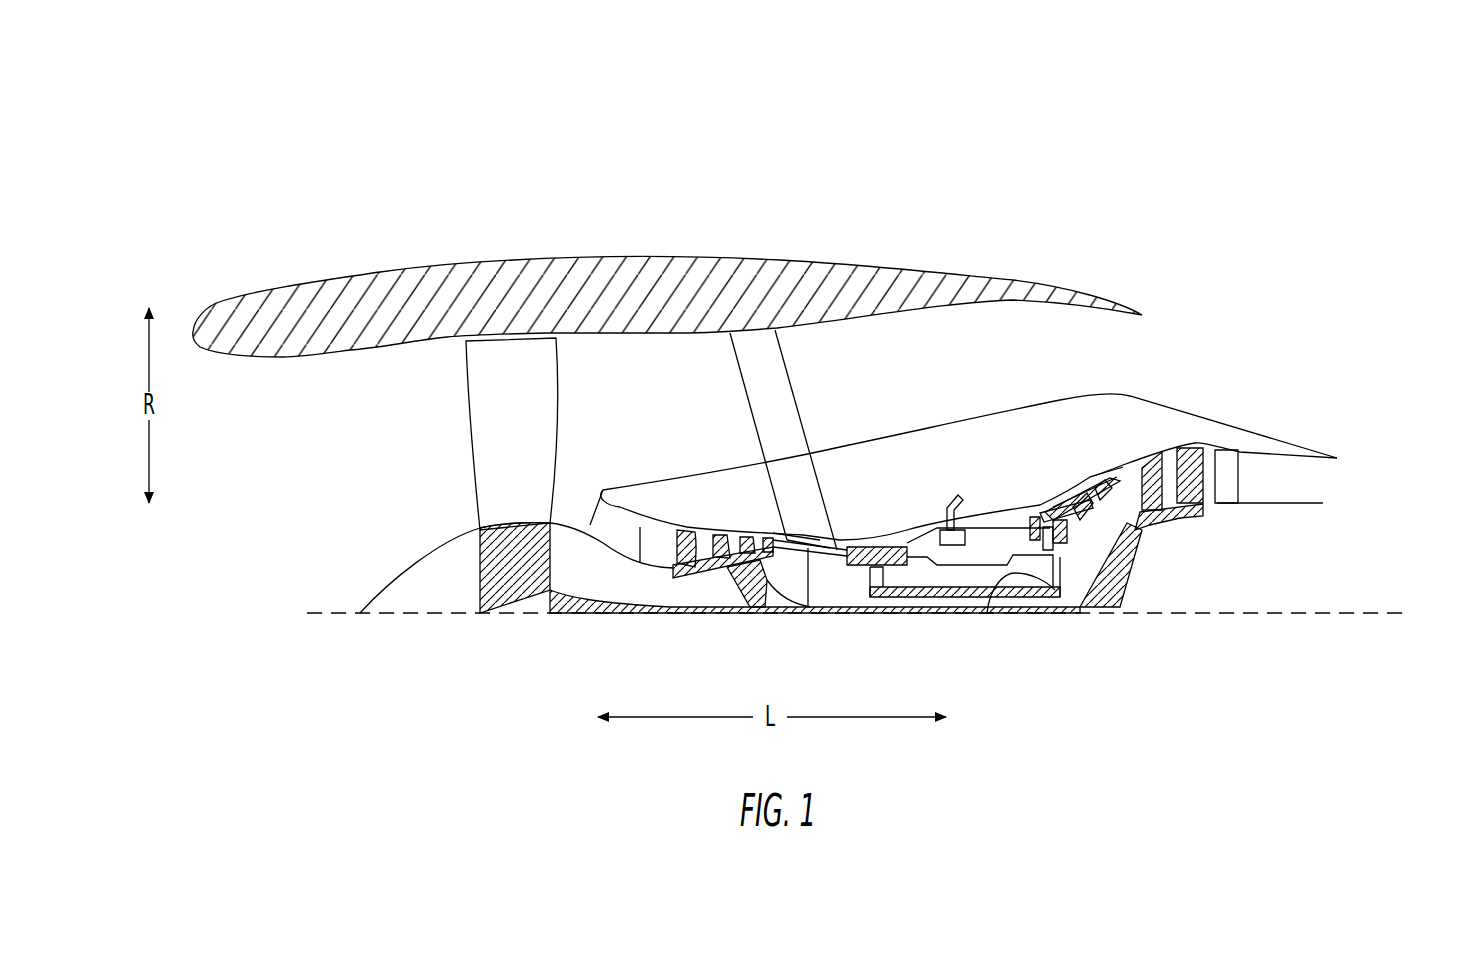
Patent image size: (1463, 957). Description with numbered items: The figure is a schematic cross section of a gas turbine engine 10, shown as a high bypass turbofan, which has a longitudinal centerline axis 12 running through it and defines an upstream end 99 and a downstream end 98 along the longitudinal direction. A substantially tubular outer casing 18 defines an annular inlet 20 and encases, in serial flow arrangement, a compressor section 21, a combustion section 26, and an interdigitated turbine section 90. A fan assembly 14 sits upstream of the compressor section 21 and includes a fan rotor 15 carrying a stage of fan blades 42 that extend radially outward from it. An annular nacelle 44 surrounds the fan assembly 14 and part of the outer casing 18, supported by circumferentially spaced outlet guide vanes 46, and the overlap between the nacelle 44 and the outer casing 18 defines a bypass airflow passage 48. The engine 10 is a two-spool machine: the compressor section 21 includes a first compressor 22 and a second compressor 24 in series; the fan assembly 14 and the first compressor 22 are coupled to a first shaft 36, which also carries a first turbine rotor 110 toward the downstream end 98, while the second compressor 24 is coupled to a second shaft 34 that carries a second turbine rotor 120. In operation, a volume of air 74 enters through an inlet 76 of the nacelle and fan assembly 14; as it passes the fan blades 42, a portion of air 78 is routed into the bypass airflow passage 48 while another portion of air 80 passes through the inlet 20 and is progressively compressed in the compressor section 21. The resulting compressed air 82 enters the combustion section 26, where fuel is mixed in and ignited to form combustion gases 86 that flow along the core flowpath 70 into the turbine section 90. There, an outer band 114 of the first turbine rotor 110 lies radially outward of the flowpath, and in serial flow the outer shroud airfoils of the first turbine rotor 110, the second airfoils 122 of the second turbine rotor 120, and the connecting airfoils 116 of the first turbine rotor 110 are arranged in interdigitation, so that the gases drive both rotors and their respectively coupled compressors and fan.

The gas turbine engine 10 is at (952, 145).
The longitudinal centerline axis 12 is at (1340, 612).
The fan assembly 14 is at (457, 468).
The fan rotor 15 is at (493, 571).
The outer casing 18 is at (912, 443).
The annular inlet 20 is at (590, 497).
The compressor section 21 is at (800, 507).
The first compressor 22 is at (684, 534).
The second compressor 24 is at (850, 538).
The combustion section 26 is at (980, 500).
The second shaft 34 is at (840, 600).
The first shaft 36 is at (580, 605).
The fan blades 42 is at (475, 392).
The nacelle 44 is at (416, 262).
The outlet guide vanes 46 is at (787, 421).
The bypass airflow passage 48 is at (847, 410).
The core flowpath 70 is at (660, 543).
The volume of air 74 is at (320, 502).
The inlet 76 is at (317, 433).
The bypass air portion 78 is at (637, 413).
The core air portion 80 is at (560, 512).
The compressed air 82 is at (806, 610).
The combustion gases 86 is at (973, 542).
The turbine section 90 is at (1120, 437).
The downstream end 98 is at (1455, 519).
The upstream end 99 is at (120, 519).
The first turbine rotor 110 is at (1130, 578).
The outer band 114 is at (1068, 510).
The connecting airfoil 116 is at (1127, 477).
The second turbine rotor 120 is at (990, 598).
The second airfoils 122 is at (1036, 520).